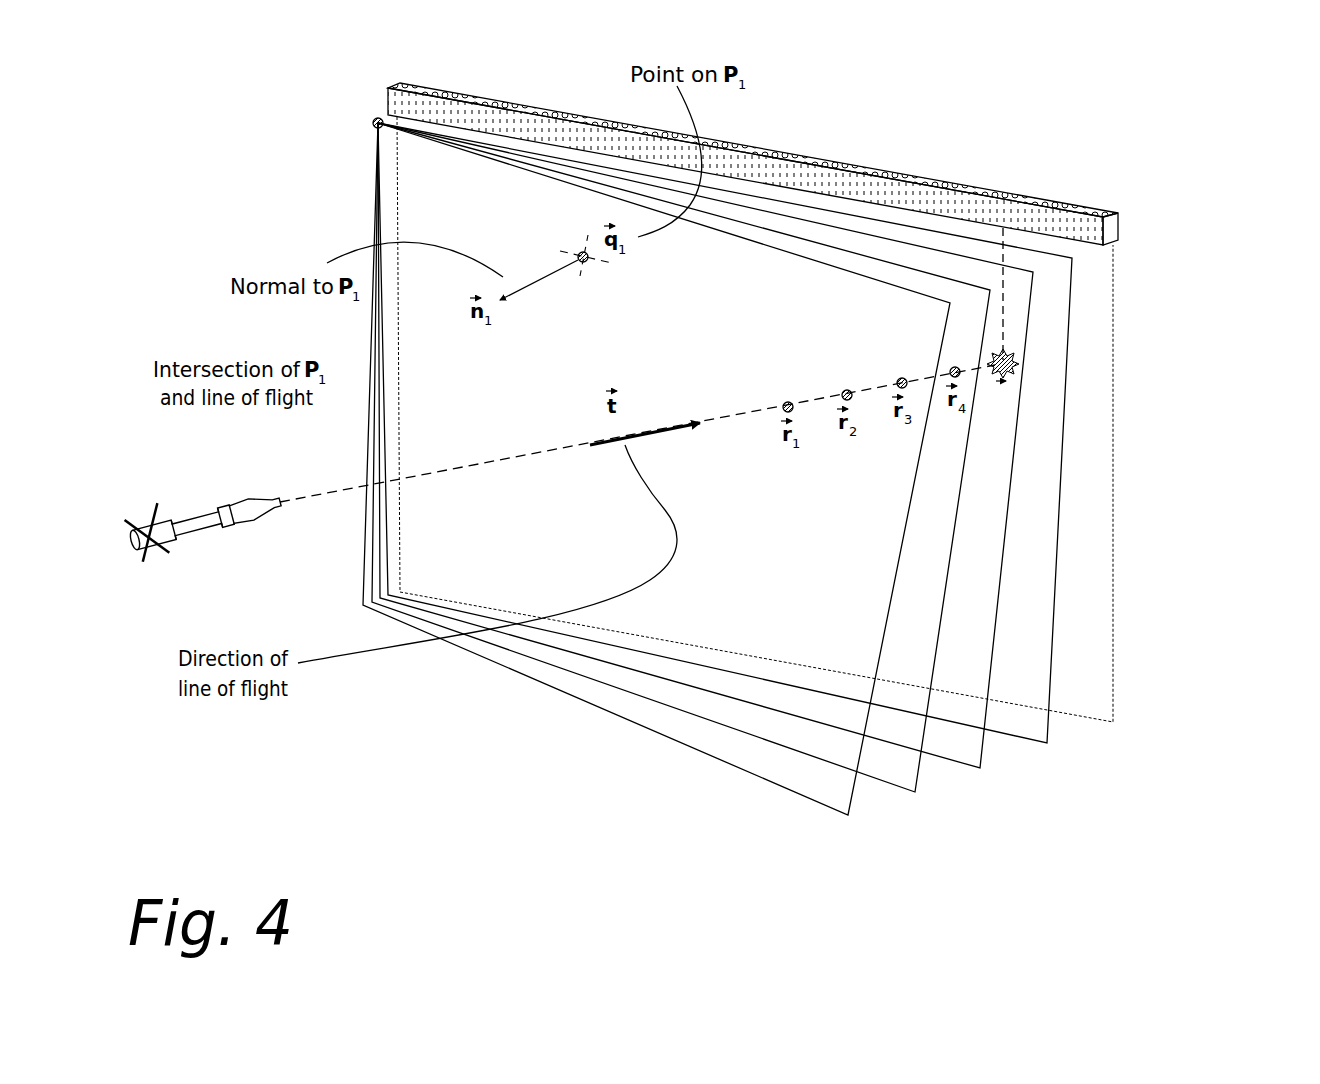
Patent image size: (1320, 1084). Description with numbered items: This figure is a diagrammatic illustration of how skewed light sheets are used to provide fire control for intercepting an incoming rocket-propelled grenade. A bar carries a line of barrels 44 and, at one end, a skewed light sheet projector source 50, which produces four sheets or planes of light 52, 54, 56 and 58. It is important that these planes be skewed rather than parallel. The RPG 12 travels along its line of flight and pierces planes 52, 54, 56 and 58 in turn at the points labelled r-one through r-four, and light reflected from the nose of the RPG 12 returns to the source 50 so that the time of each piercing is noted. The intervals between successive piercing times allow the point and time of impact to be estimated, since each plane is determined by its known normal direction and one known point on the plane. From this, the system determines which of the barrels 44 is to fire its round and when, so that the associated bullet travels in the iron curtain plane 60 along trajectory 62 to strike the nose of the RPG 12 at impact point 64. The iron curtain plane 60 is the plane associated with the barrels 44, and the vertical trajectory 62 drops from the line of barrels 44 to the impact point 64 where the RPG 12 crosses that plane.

The RPG 12 is at (243, 505).
The barrels 44 is at (818, 152).
The skewed light sheet projector source 50 is at (373, 120).
The plane of light 52 is at (845, 793).
The plane of light 54 is at (910, 770).
The plane of light 56 is at (972, 750).
The plane of light 58 is at (1037, 727).
The iron curtain plane 60 is at (1103, 597).
The trajectory 62 is at (1003, 318).
The impact point 64 is at (1028, 367).